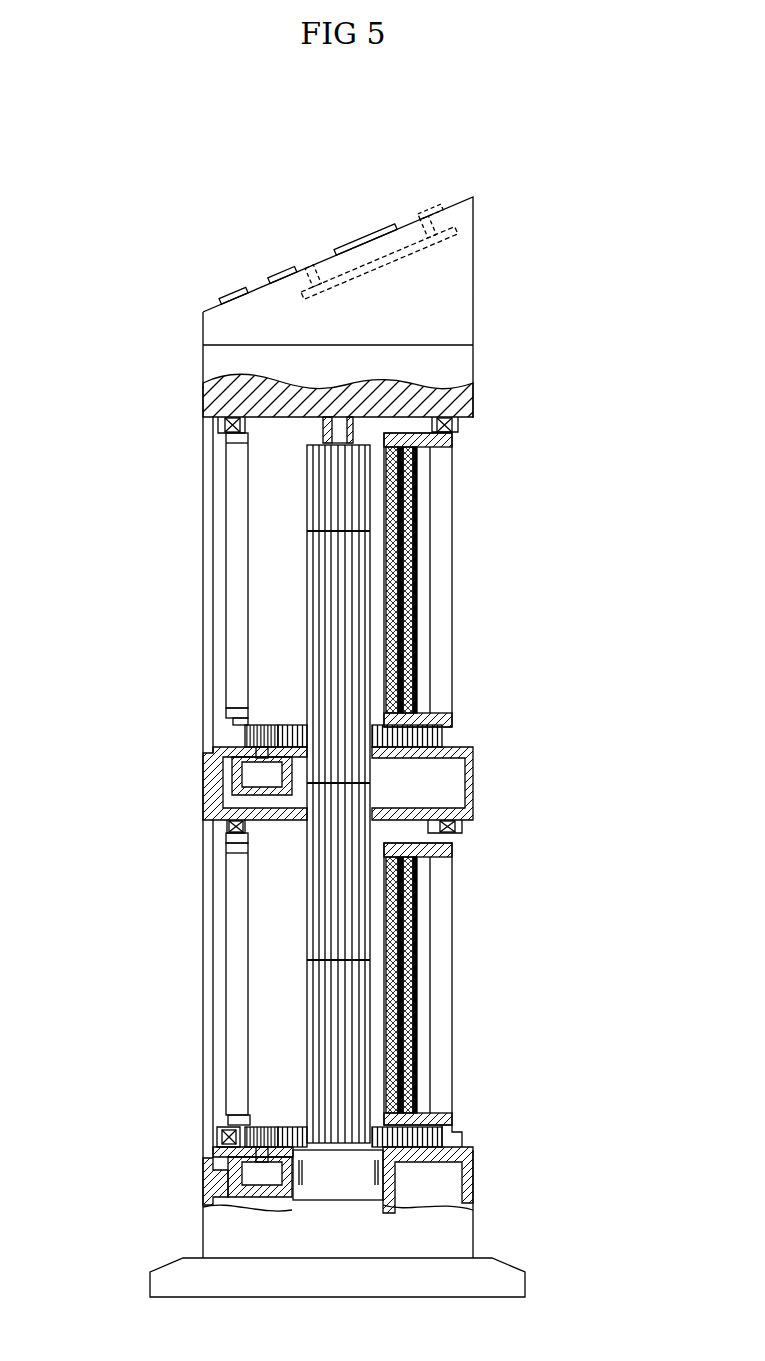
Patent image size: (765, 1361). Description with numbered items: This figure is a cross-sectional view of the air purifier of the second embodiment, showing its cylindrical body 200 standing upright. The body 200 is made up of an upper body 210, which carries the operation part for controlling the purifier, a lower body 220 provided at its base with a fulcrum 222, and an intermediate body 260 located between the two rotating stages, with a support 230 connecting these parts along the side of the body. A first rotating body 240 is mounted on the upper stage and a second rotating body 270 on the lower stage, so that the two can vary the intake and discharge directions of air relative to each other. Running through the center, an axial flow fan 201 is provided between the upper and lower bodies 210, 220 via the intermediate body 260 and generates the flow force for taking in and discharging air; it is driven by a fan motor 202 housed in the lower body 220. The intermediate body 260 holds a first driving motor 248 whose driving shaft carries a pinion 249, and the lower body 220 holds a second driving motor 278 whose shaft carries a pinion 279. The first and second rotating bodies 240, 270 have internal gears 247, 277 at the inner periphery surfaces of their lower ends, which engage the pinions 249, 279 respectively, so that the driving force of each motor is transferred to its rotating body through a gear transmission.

The body 200 is at (170, 277).
The axial flow fan 201 is at (317, 972).
The fan motor 202 is at (330, 1200).
The upper body 210 is at (458, 293).
The lower body 220 is at (463, 1223).
The fulcrum 222 is at (505, 1282).
The support 230 is at (207, 570).
The first rotating body 240 is at (468, 586).
The internal gear 247 is at (287, 725).
The first driving motor 248 is at (247, 777).
The pinion 249 is at (250, 740).
The intermediate body 260 is at (473, 772).
The second rotating body 270 is at (479, 964).
The internal gear 277 is at (287, 1127).
The second driving motor 278 is at (250, 1178).
The pinion 279 is at (232, 1140).